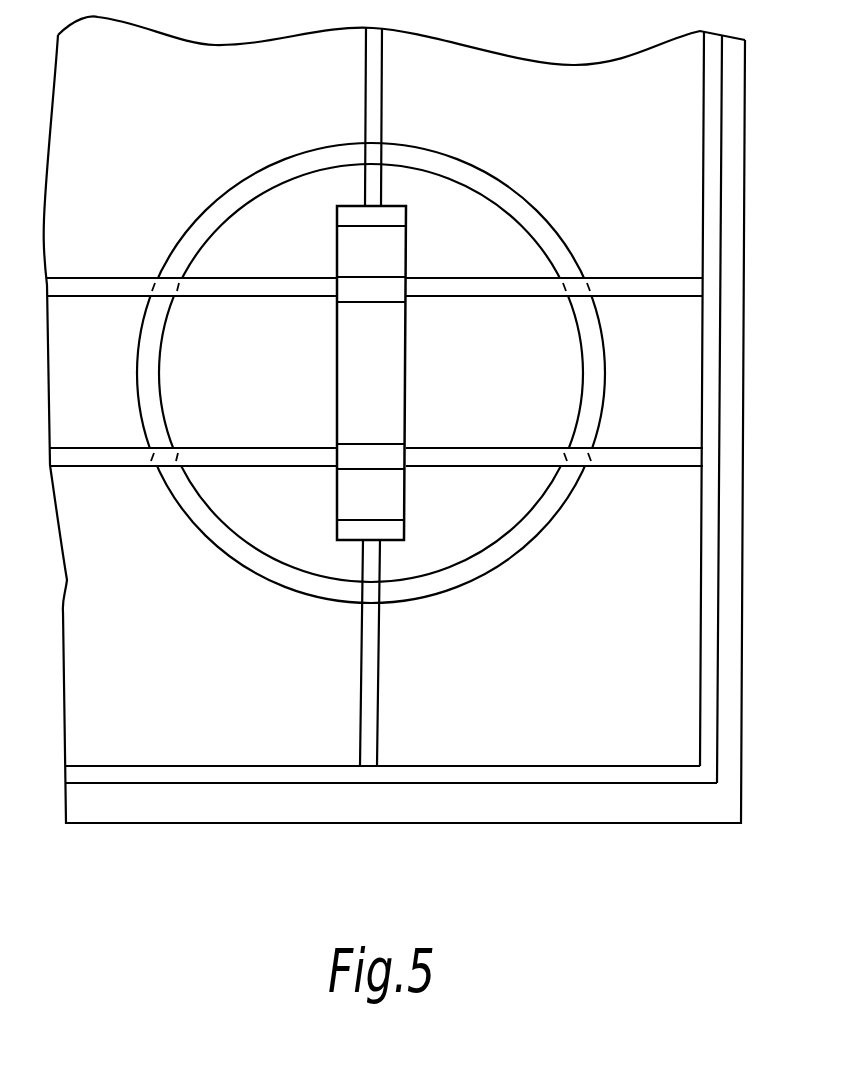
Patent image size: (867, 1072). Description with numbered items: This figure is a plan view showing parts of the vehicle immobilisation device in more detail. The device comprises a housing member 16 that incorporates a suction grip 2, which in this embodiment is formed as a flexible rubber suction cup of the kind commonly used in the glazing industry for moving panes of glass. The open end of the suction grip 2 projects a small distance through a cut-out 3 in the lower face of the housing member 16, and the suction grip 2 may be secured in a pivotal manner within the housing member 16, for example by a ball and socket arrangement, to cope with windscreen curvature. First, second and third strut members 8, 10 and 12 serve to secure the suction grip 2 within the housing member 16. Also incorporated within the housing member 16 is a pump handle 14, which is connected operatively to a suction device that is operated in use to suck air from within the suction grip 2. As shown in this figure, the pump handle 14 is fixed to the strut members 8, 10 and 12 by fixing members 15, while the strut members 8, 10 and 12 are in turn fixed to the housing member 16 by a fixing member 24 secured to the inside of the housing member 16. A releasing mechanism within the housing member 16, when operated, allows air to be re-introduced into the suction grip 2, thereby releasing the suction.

The suction grip 2 is at (497, 199).
The cut-out 3 is at (234, 192).
The first strut member 8 is at (374, 100).
The second strut member 10 is at (113, 287).
The third strut member 12 is at (89, 457).
The pump handle 14 is at (370, 377).
The fixing members 15 is at (350, 216).
The housing member 16 is at (255, 798).
The fixing member 24 is at (499, 772).